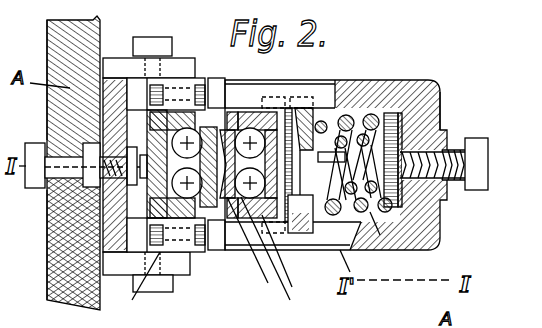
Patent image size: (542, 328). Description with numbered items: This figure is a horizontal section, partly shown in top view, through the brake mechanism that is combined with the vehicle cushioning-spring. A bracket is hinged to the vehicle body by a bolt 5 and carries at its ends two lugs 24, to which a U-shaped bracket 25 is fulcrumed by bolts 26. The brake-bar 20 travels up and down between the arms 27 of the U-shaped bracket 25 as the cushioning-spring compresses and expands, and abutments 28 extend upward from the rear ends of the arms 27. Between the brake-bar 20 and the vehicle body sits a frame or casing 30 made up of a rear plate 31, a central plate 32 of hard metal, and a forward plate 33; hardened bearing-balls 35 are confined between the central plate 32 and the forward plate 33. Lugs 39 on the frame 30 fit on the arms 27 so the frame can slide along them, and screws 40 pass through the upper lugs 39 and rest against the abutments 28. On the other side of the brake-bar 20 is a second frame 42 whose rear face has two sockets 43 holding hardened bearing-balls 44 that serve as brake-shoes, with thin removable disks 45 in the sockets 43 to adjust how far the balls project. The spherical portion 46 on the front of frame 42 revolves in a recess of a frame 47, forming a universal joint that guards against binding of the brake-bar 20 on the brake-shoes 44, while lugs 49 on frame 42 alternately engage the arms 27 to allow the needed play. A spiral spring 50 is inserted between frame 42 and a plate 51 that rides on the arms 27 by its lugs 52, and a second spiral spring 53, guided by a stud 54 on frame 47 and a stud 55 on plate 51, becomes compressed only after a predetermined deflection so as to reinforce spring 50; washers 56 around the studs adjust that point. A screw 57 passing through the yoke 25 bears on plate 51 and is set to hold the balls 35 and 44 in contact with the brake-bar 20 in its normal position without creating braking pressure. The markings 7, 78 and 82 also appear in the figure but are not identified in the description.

The bolt 5 is at (60, 190).
The member 7 is at (537, 315).
The brake-bar 20 is at (221, 260).
The lugs 24 is at (135, 72).
The U-shaped bracket 25 is at (425, 108).
The bolts 26 is at (142, 83).
The arms 27 is at (295, 108).
The abutments 28 is at (145, 82).
The frame or casing 30 is at (50, 277).
The rear plate 31 is at (50, 227).
The central plate 32 is at (105, 132).
The forward plate 33 is at (103, 100).
The hardened bearing-balls 35 is at (265, 108).
The lugs 39 is at (176, 80).
The screws 40 is at (228, 108).
The frame or casing 42 is at (350, 272).
The sockets 43 is at (300, 213).
The hardened bearing-balls 44 is at (300, 235).
The thin removable disks 45 is at (308, 228).
The spherical portion 46 is at (320, 108).
The frame 47 is at (350, 80).
The lugs 49 is at (322, 80).
The spiral spring 50 is at (398, 95).
The plate 51 is at (410, 90).
The lugs 52 is at (403, 105).
The second spiral spring 53 is at (362, 105).
The stud 54 is at (378, 95).
The stud 55 is at (442, 113).
The washers 56 is at (375, 235).
The screw 57 is at (460, 148).
The member 78 is at (498, 315).
The member 82 is at (372, 300).